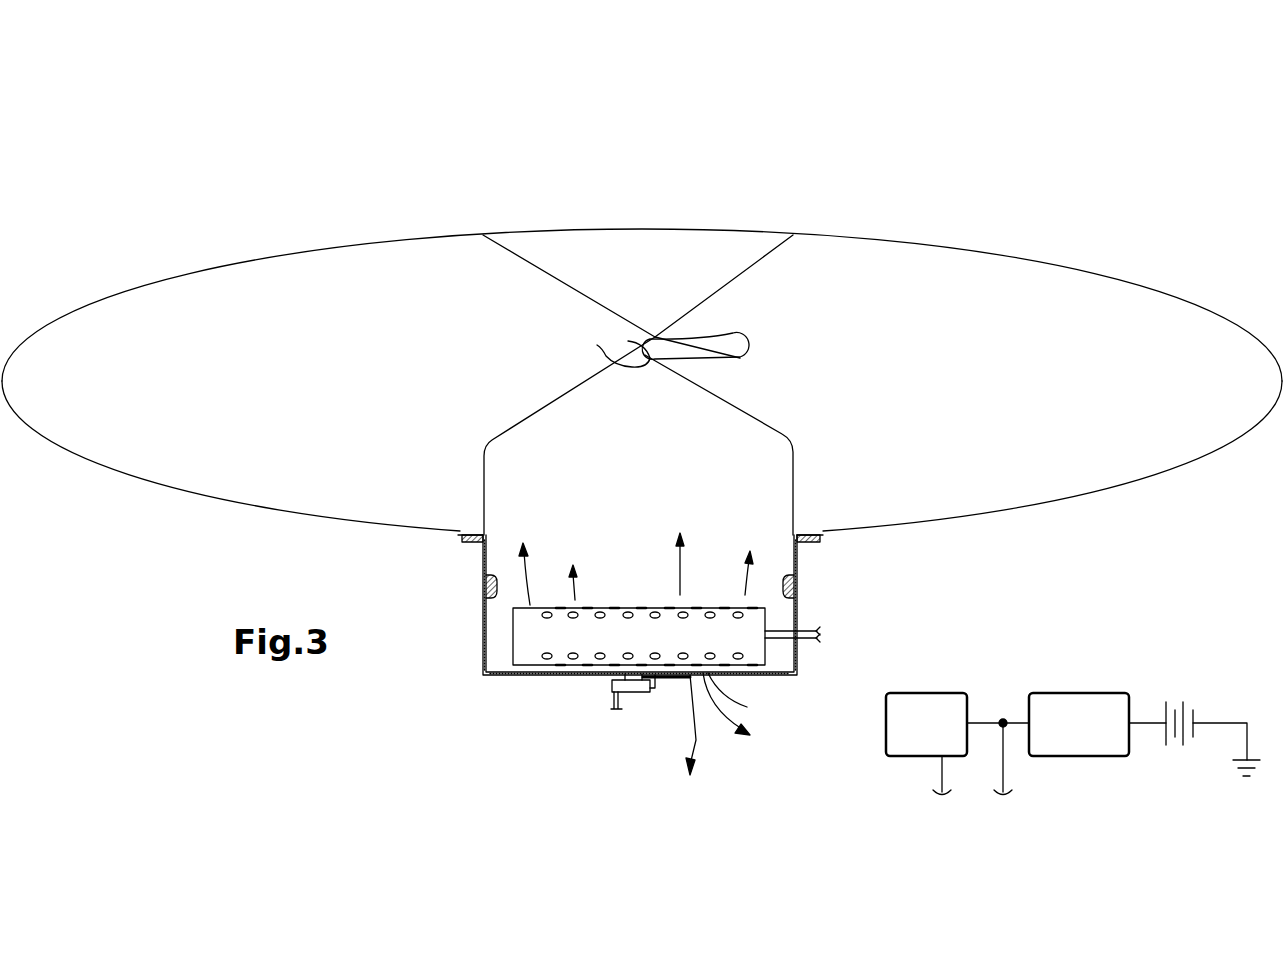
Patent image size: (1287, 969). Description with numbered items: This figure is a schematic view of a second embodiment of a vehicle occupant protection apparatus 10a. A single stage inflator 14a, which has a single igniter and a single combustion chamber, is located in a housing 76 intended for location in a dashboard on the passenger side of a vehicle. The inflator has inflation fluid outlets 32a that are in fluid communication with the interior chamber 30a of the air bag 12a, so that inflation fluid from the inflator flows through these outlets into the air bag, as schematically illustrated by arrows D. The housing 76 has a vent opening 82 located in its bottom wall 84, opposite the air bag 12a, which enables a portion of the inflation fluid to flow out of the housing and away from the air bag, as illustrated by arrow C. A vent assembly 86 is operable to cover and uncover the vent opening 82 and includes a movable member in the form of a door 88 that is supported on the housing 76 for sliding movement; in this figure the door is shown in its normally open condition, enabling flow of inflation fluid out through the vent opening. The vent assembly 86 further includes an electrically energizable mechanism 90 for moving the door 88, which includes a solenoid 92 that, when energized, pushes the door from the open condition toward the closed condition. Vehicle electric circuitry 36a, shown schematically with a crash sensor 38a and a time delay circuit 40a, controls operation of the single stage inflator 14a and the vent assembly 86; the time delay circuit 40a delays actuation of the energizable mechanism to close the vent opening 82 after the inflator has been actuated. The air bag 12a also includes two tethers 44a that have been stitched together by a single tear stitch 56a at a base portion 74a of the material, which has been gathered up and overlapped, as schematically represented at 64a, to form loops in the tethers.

The vehicle occupant protection apparatus 10a is at (1103, 235).
The air bag 12a is at (272, 257).
The single stage inflator 14a is at (513, 637).
The interior chamber 30a is at (940, 391).
The inflation fluid outlets 32a is at (683, 655).
The vehicle electric circuitry 36a is at (1058, 780).
The crash sensor 38a is at (1088, 753).
The time delay circuit 40a is at (900, 751).
The tethers 44a is at (553, 275).
The tear stitch 56a is at (660, 333).
The gathered and overlapped material 64a is at (748, 338).
The base portion 74a is at (628, 341).
The housing 76 is at (483, 616).
The vent opening 82 is at (740, 696).
The bottom wall 84 is at (513, 676).
The vent assembly 86 is at (617, 715).
The door 88 is at (660, 676).
The electrically energizable mechanism 90 is at (518, 733).
The solenoid 92 is at (612, 687).
The arrow D is at (750, 583).
The arrow C is at (722, 720).